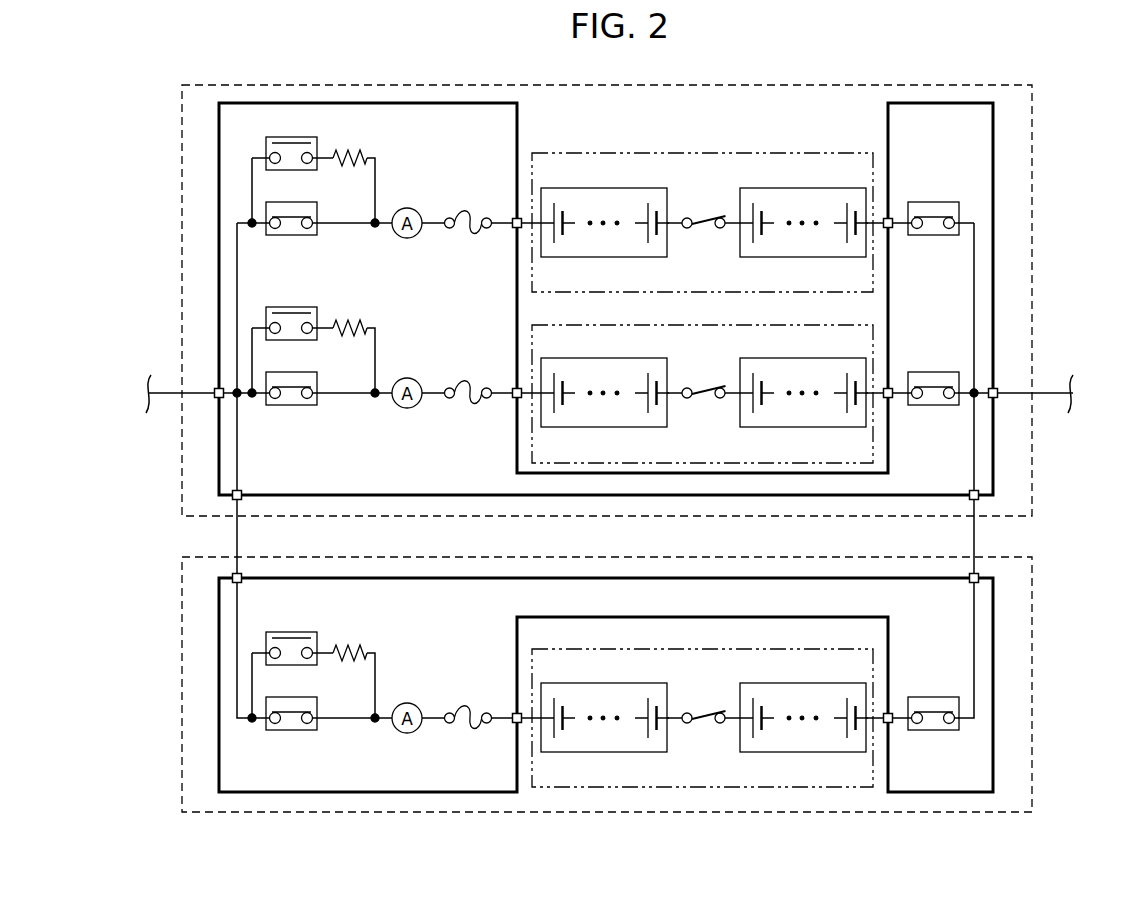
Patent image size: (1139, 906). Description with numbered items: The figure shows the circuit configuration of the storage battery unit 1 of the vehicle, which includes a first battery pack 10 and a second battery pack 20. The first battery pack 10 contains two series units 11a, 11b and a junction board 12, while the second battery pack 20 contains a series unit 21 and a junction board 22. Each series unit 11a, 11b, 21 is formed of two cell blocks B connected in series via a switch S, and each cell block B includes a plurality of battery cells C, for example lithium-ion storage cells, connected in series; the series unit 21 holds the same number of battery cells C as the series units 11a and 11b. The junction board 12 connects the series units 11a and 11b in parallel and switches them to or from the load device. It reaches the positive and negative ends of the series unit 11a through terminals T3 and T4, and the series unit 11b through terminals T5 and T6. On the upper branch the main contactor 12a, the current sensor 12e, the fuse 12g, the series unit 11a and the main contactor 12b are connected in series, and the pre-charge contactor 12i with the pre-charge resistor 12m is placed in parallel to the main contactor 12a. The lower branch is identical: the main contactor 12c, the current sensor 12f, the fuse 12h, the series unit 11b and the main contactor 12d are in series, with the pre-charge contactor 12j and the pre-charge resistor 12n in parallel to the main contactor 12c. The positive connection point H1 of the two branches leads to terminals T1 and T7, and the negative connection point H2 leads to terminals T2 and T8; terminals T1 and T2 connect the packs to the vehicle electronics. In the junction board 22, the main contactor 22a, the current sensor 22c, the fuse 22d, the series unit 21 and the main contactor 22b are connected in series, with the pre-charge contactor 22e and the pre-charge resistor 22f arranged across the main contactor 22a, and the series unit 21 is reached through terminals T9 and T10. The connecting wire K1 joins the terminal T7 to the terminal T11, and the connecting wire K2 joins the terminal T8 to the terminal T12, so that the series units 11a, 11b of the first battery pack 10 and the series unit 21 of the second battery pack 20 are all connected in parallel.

The storage battery unit 1 is at (787, 69).
The first battery pack 10 is at (1033, 258).
The second battery pack 20 is at (1033, 670).
The junction board 12 is at (993, 143).
The junction board 22 is at (993, 748).
The series unit 11a is at (755, 137).
The series unit 11b is at (725, 325).
The series unit 21 is at (725, 649).
The cell block B is at (813, 188).
The battery cell C is at (833, 761).
The switch S is at (706, 712).
The main contactor 12a is at (283, 202).
The main contactor 12b is at (928, 202).
The main contactor 12c is at (283, 372).
The main contactor 12d is at (928, 372).
The current sensor 12e is at (407, 207).
The current sensor 12f is at (407, 377).
The fuse 12g is at (466, 212).
The fuse 12h is at (466, 382).
The pre-charge contactor 12i is at (283, 137).
The pre-charge contactor 12j is at (283, 307).
The pre-charge resistor 12m is at (365, 153).
The pre-charge resistor 12n is at (365, 323).
The main contactor 22a is at (283, 697).
The main contactor 22b is at (928, 697).
The current sensor 22c is at (407, 702).
The fuse 22d is at (466, 707).
The pre-charge contactor 22e is at (283, 632).
The pre-charge resistor 22f is at (365, 648).
The connection point H1 is at (235, 389).
The connection point H2 is at (977, 390).
The connecting wire K1 is at (236, 534).
The connecting wire K2 is at (976, 535).
The terminal T1 is at (218, 399).
The terminal T2 is at (997, 399).
The terminal T3 is at (515, 229).
The terminal T4 is at (891, 229).
The terminal T5 is at (515, 399).
The terminal T6 is at (891, 399).
The terminal T7 is at (241, 491).
The terminal T8 is at (970, 491).
The terminal T9 is at (515, 724).
The terminal T10 is at (891, 724).
The terminal T11 is at (241, 582).
The terminal T12 is at (970, 582).